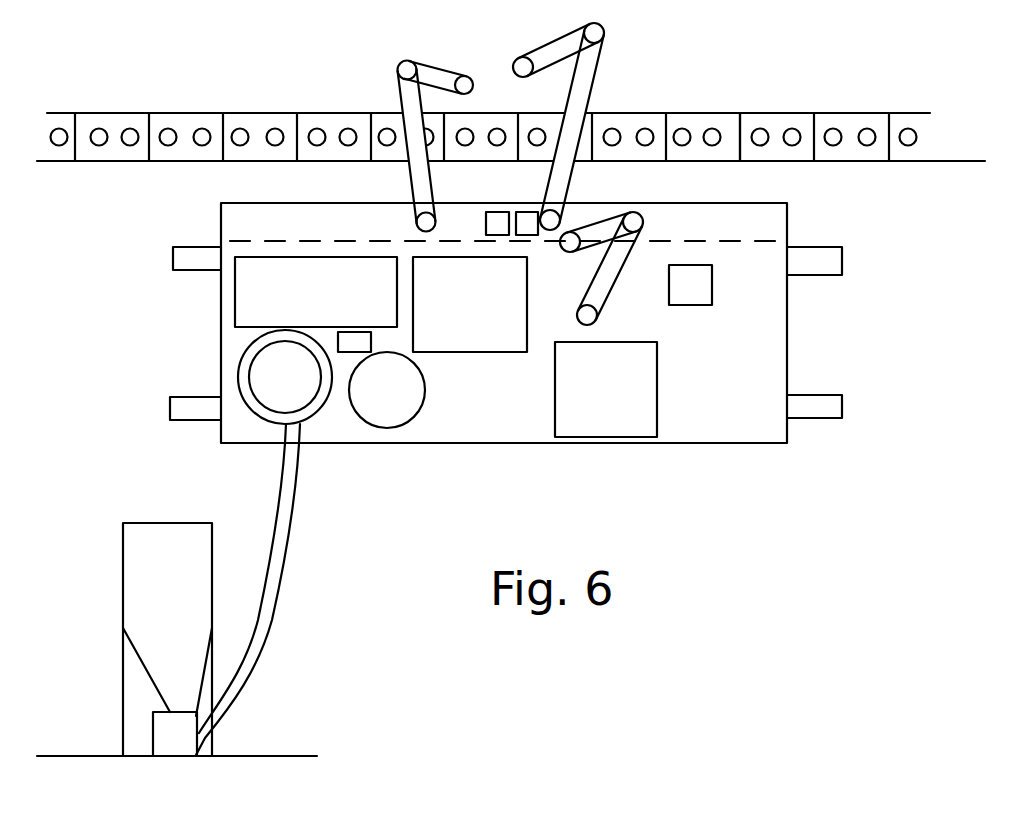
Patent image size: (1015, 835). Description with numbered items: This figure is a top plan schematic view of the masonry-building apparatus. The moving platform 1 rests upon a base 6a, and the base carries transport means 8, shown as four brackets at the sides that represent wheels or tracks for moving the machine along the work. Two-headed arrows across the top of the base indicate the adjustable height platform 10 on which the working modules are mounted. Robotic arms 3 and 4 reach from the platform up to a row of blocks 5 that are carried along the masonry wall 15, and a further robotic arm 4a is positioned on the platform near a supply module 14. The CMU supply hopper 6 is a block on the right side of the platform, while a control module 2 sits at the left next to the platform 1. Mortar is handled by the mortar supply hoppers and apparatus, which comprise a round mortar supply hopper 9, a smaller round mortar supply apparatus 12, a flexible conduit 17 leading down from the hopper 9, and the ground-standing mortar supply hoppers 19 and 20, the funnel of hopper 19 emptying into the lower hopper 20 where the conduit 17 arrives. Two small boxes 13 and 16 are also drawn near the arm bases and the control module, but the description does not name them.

The moving platform 1 is at (480, 318).
The control module 2 is at (325, 312).
The robotic arm 3 is at (403, 96).
The robotic arm 4 is at (584, 77).
The robotic arm 4a is at (607, 272).
The blocks 5 is at (181, 112).
The CMU supply hopper 6 is at (620, 396).
The base 6a is at (745, 404).
The transport means 8 is at (192, 258).
The mortar supply hopper 9 is at (296, 388).
The adjustable height platform 10 is at (353, 223).
The mortar supply apparatus 12 is at (408, 405).
The sensor 13 is at (516, 210).
The supply module 14 is at (693, 294).
The masonry wall 15 is at (744, 125).
The valve 16 is at (348, 338).
The mortar supply apparatus 17 is at (270, 568).
The mortar supply hopper 19 is at (182, 612).
The mortar supply hopper 20 is at (188, 745).